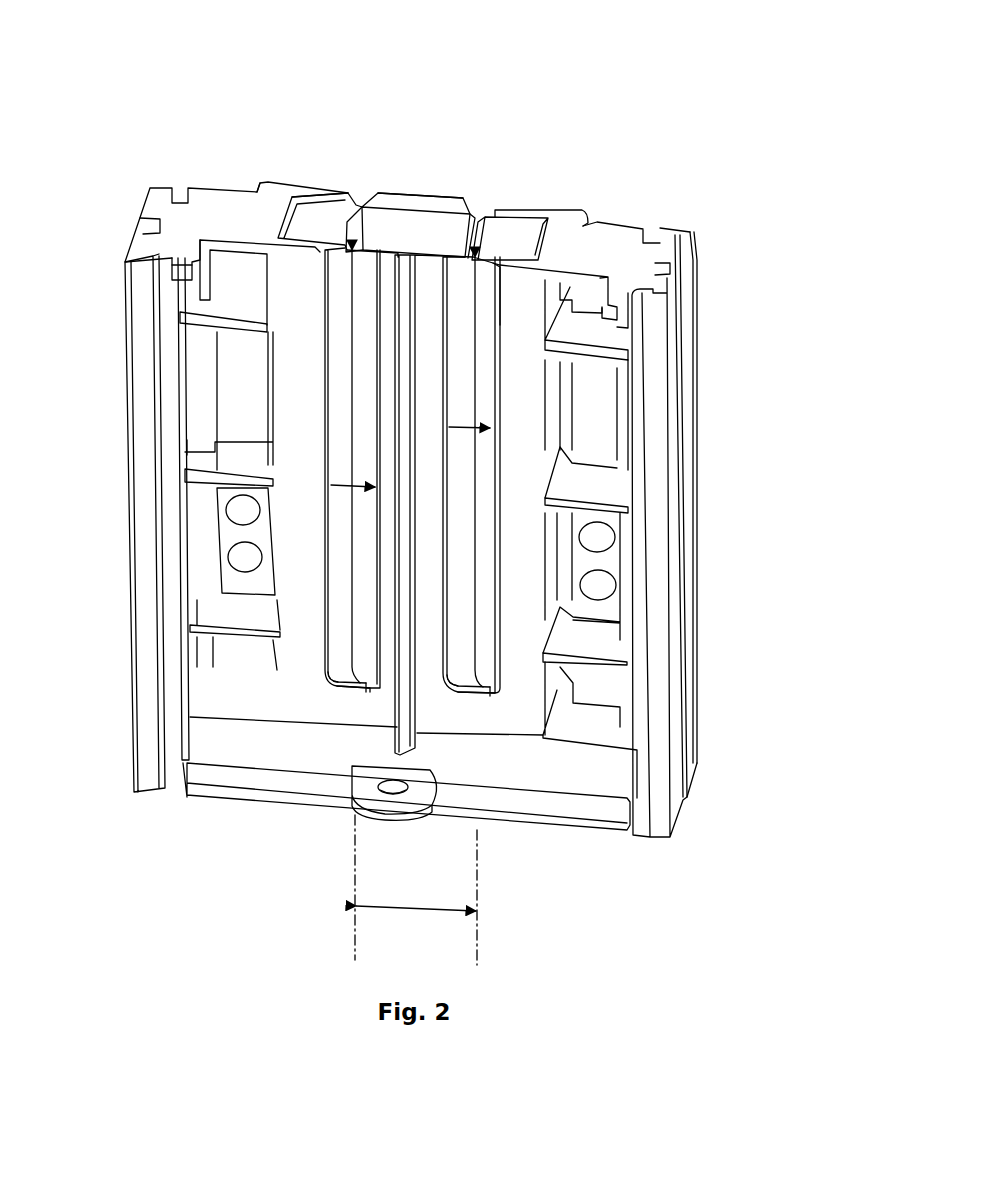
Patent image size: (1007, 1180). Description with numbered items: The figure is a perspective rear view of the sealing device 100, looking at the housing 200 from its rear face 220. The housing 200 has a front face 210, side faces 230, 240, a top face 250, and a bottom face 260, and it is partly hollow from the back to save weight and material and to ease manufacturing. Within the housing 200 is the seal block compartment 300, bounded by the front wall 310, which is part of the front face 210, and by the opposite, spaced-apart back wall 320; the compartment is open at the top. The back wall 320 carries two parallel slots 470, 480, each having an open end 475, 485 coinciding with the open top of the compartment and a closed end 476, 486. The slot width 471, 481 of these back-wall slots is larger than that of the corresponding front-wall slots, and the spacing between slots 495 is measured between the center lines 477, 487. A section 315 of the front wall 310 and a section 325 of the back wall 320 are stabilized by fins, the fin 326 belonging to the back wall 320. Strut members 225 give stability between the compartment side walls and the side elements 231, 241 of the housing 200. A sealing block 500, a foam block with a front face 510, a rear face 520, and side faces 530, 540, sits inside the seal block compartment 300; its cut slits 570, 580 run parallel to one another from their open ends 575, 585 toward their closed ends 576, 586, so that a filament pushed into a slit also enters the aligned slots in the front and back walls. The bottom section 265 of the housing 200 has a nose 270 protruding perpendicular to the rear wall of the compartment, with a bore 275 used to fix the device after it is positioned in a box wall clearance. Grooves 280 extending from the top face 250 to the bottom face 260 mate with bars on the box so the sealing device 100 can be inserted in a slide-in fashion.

The sealing device 100 is at (122, 40).
The housing 200 is at (130, 617).
The front face 210 is at (625, 222).
The rear face 220 is at (300, 552).
The strut members 225 is at (223, 323).
The side face 230 is at (693, 420).
The side element 231 is at (690, 245).
The side face 240 is at (130, 366).
The side element 241 is at (153, 192).
The top face 250 is at (215, 205).
The bottom face 260 is at (200, 800).
The bottom section 265 is at (705, 798).
The nose 270 is at (427, 768).
The bore 275 is at (463, 700).
The grooves 280 is at (185, 200).
The seal block compartment 300 is at (433, 200).
The front wall 310 is at (328, 196).
The finger like section 315 is at (408, 190).
The back wall 320 is at (345, 660).
The finger like section 325 is at (433, 520).
The fin 326 is at (403, 558).
The slot 470 is at (485, 212).
The slot width 471 is at (478, 425).
The open end 475 is at (522, 225).
The closed end 476 is at (497, 697).
The center line 477 is at (480, 945).
The slot 480 is at (358, 200).
The slot width 481 is at (295, 543).
The open end 485 is at (300, 205).
The closed end 486 is at (340, 693).
The center line 487 is at (352, 940).
The spacing between slots 495 is at (412, 905).
The sealing block 500 is at (283, 248).
The front face 510 is at (552, 215).
The rear face 520 is at (335, 362).
The side face 530 is at (548, 243).
The side face 540 is at (265, 235).
The slit 570 is at (548, 465).
The right top shelf 575 is at (545, 345).
The closed end 576 is at (452, 703).
The slit 580 is at (345, 415).
The left top shelf 585 is at (313, 280).
The closed end 586 is at (383, 692).